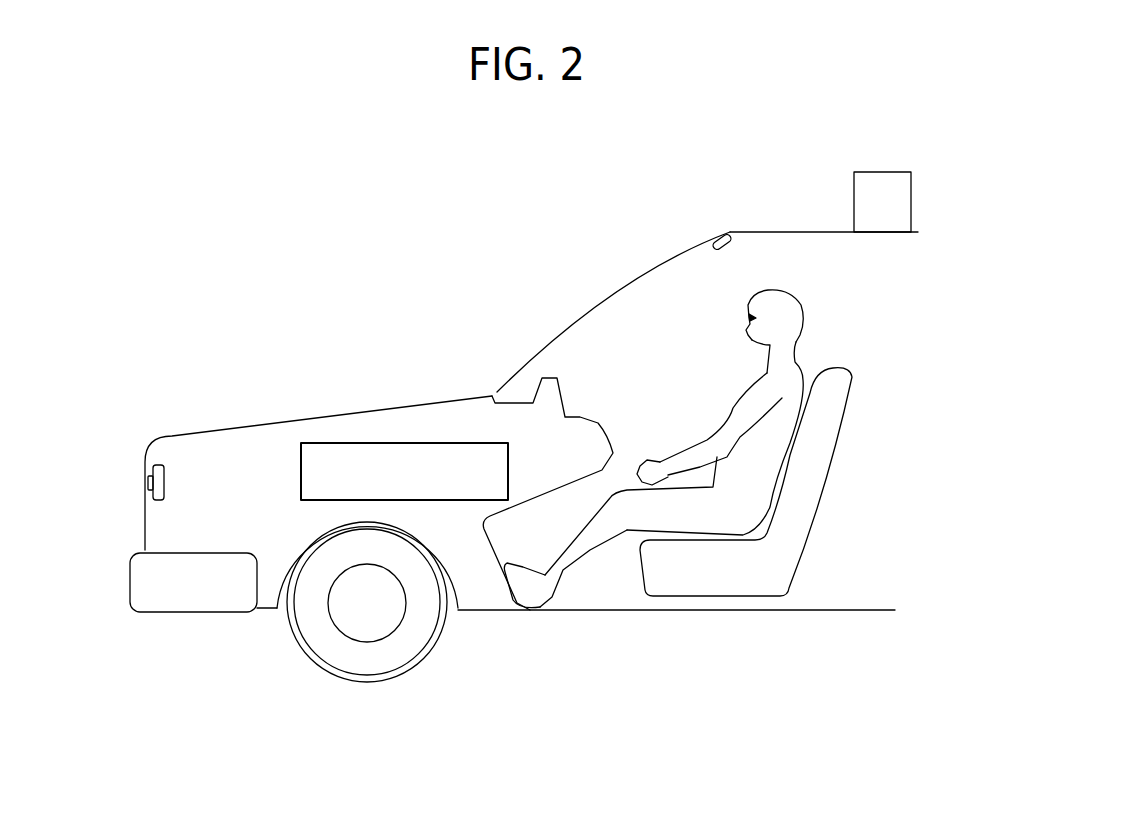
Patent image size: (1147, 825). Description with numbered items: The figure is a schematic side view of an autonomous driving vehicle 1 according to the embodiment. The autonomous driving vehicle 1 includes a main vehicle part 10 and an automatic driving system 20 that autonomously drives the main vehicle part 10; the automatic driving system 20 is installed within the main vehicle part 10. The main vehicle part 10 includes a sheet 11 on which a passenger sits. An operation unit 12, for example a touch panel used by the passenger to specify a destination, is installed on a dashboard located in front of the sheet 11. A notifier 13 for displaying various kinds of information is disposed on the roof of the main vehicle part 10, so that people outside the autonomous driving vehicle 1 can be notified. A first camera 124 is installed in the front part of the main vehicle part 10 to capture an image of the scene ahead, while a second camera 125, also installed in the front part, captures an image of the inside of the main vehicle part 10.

The autonomous driving vehicle 1 is at (243, 305).
The main vehicle part 10 is at (488, 386).
The sheet 11 is at (710, 587).
The operation unit 12 is at (547, 387).
The notifier 13 is at (867, 203).
The automatic driving system 20 is at (310, 442).
The first camera 124 is at (165, 478).
The second camera 125 is at (720, 233).